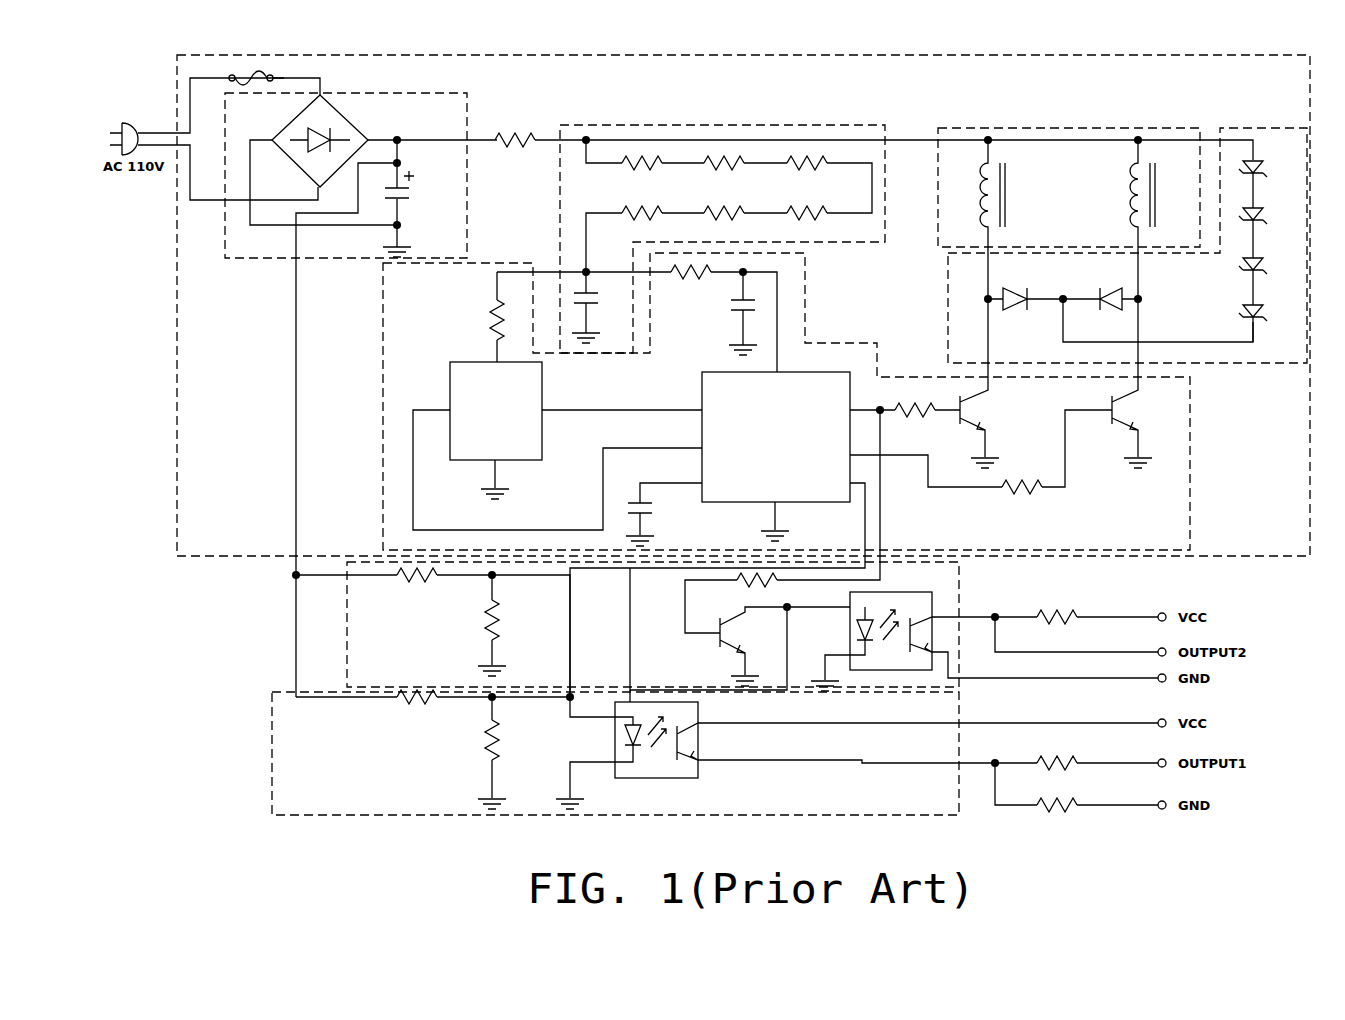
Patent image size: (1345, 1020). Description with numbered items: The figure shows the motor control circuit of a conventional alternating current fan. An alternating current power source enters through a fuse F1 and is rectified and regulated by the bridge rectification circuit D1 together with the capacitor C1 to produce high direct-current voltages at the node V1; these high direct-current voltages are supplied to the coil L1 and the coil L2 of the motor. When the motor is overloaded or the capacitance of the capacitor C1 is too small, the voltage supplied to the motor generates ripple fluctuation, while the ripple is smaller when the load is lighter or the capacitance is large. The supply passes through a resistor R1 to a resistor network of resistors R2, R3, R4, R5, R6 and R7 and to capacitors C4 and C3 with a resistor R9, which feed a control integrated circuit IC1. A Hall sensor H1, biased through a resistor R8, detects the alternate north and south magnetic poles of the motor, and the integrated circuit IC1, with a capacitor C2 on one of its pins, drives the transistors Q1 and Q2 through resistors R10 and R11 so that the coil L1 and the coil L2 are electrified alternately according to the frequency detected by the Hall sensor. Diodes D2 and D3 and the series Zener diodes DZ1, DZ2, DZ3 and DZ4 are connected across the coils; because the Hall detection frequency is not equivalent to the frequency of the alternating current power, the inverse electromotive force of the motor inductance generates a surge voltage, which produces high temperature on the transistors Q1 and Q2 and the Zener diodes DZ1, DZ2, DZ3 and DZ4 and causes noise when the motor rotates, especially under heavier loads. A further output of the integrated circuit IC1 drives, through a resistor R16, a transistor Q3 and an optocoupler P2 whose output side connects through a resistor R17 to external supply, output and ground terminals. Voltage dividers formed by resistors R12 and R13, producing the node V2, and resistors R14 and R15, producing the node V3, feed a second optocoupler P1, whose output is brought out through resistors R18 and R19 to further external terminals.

The fuse F1 is at (273, 77).
The bridge rectification circuit D1 is at (324, 141).
The rectified voltage node V1 is at (404, 133).
The capacitor C1 is at (393, 198).
The resistor R1 is at (540, 149).
The resistor R2 is at (642, 174).
The resistor R3 is at (724, 174).
The resistor R4 is at (807, 174).
The resistor R5 is at (807, 224).
The resistor R6 is at (724, 224).
The resistor R7 is at (642, 224).
The resistor R8 is at (483, 317).
The resistor R9 is at (691, 281).
The capacitor C4 is at (598, 307).
The capacitor C3 is at (729, 313).
The capacitor C2 is at (664, 514).
The hall sensor H1 is at (496, 430).
The motor driver integrated circuit IC1 is at (776, 447).
The resistor R10 is at (915, 420).
The resistor R11 is at (1022, 496).
The transistor Q1 is at (988, 383).
The transistor Q2 is at (1141, 383).
The coil L1 is at (984, 219).
The coil L2 is at (1154, 219).
The diode D2 is at (1025, 308).
The diode D3 is at (1100, 308).
The Zener diode DZ1 is at (1265, 184).
The Zener diode DZ2 is at (1265, 233).
The Zener diode DZ3 is at (1265, 281).
The Zener diode DZ4 is at (1265, 323).
The resistor R16 is at (757, 589).
The transistor Q3 is at (771, 646).
The optocoupler P2 is at (984, 641).
The resistor R17 is at (1076, 627).
The resistor R12 is at (417, 585).
The voltage node V2 is at (490, 580).
The resistor R13 is at (504, 625).
The resistor R14 is at (417, 707).
The voltage node V3 is at (490, 702).
The resistor R15 is at (504, 753).
The optocoupler P1 is at (857, 749).
The resistor R18 is at (1076, 756).
The resistor R19 is at (1076, 787).